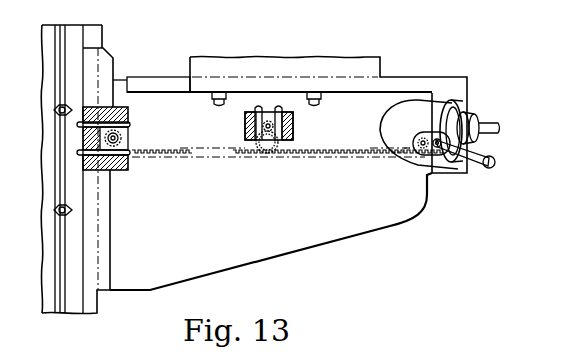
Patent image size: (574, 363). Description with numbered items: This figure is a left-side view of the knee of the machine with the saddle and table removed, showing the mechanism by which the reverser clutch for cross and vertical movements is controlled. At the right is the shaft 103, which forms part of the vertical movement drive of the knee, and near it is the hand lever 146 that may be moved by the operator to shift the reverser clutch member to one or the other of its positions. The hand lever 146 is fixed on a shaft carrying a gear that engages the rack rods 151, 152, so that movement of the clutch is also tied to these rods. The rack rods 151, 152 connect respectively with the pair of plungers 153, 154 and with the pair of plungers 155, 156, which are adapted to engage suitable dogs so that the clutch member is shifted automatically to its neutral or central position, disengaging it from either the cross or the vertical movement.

The shaft 103 is at (493, 134).
The hand lever 146 is at (474, 164).
The rack rod 151 is at (252, 153).
The rack rod 152 is at (198, 152).
The plunger 153 is at (260, 108).
The plunger 154 is at (289, 104).
The plunger 155 is at (80, 100).
The plunger 156 is at (79, 174).